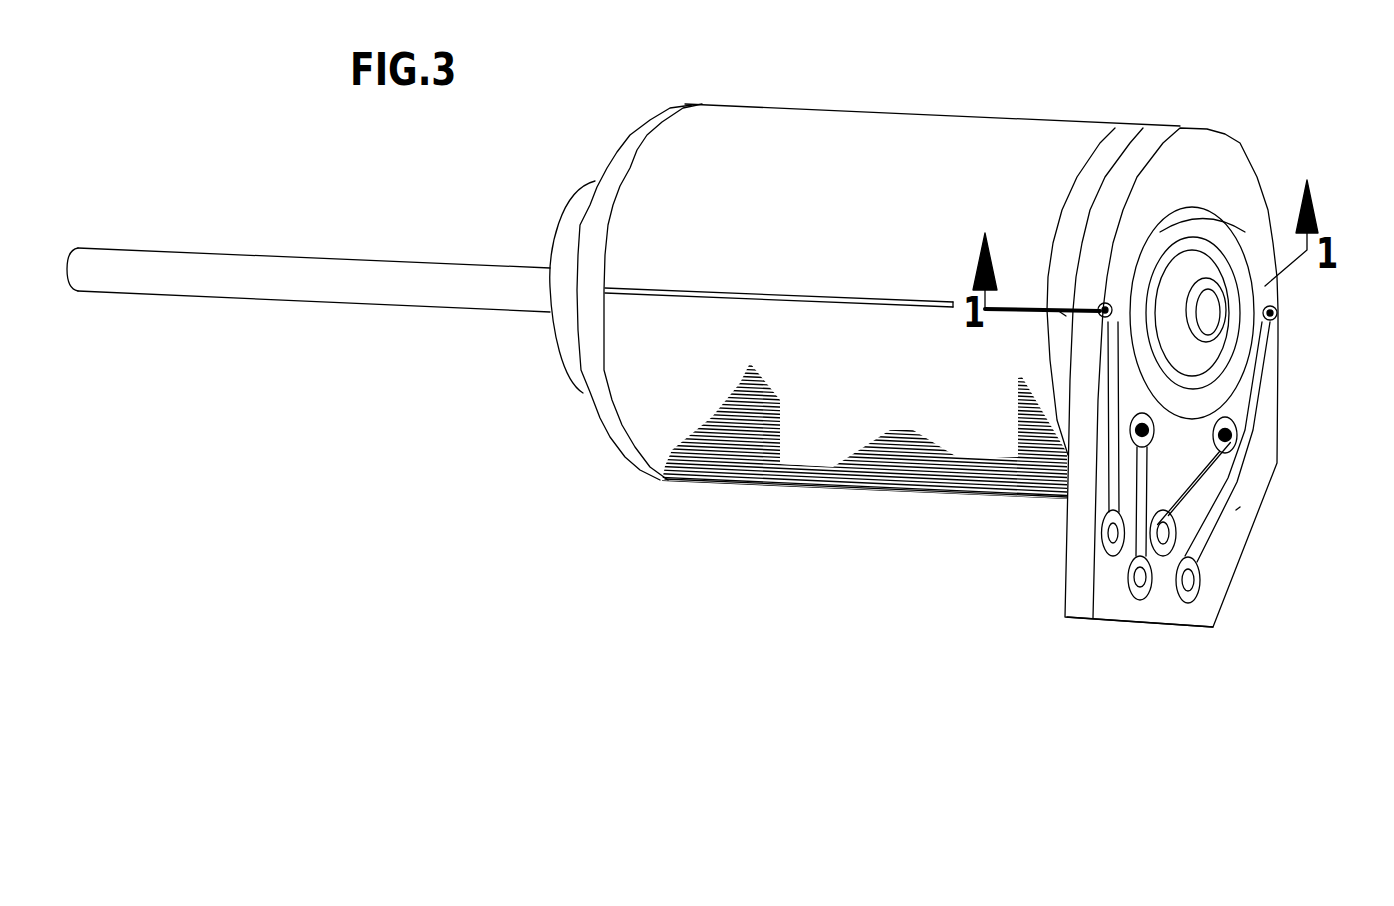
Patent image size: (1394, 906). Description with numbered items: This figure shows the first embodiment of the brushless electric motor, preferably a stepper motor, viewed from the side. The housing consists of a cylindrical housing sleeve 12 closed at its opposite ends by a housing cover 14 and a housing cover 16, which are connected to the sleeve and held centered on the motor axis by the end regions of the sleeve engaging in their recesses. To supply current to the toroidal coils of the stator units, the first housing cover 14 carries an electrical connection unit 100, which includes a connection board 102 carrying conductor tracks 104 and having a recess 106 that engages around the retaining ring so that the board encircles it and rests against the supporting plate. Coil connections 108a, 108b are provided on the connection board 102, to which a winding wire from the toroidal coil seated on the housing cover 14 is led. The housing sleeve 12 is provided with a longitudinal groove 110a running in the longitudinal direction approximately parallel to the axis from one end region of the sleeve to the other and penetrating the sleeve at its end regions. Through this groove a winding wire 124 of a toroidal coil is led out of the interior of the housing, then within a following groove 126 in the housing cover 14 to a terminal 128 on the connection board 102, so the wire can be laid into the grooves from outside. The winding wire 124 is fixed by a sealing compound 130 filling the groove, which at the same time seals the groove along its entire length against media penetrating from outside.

The housing sleeve 12 is at (836, 412).
The housing cover 14 is at (1148, 100).
The housing cover 16 is at (604, 413).
The electrical connection unit 100 is at (1266, 507).
The connection board 102 is at (1203, 603).
The conductor tracks 104 is at (1203, 548).
The recess 106 is at (1220, 220).
The coil connection 108a is at (1142, 442).
The coil connection 108b is at (1231, 437).
The longitudinal groove 110a is at (741, 296).
The winding wire 124 is at (850, 296).
The groove 126 is at (1060, 312).
The terminal 128 is at (1110, 300).
The sealing compound 130 is at (641, 292).